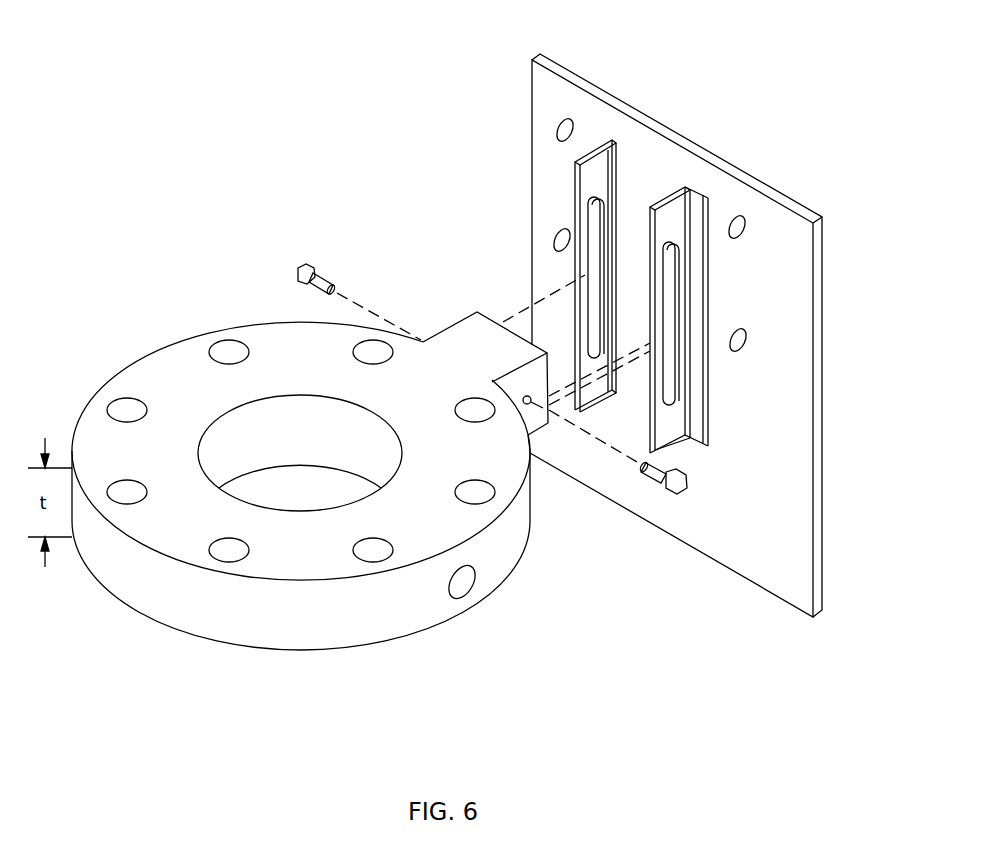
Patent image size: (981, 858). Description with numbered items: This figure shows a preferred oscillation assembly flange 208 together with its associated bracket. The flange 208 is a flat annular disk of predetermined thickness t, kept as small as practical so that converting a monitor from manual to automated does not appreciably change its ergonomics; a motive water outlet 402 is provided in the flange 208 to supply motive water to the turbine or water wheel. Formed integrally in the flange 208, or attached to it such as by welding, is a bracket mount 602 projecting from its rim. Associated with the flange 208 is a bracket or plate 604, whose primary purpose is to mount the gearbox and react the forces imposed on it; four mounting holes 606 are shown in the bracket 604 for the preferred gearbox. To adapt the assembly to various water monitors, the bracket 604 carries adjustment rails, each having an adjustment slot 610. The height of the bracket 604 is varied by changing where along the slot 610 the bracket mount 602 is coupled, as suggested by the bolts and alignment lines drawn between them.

The oscillator flange 208 is at (182, 368).
The motive water outlet 402 is at (463, 583).
The bracket mount 602 is at (470, 338).
The bracket 604 is at (548, 92).
The mounting holes 606 is at (740, 222).
The adjustment slot 610 is at (668, 394).